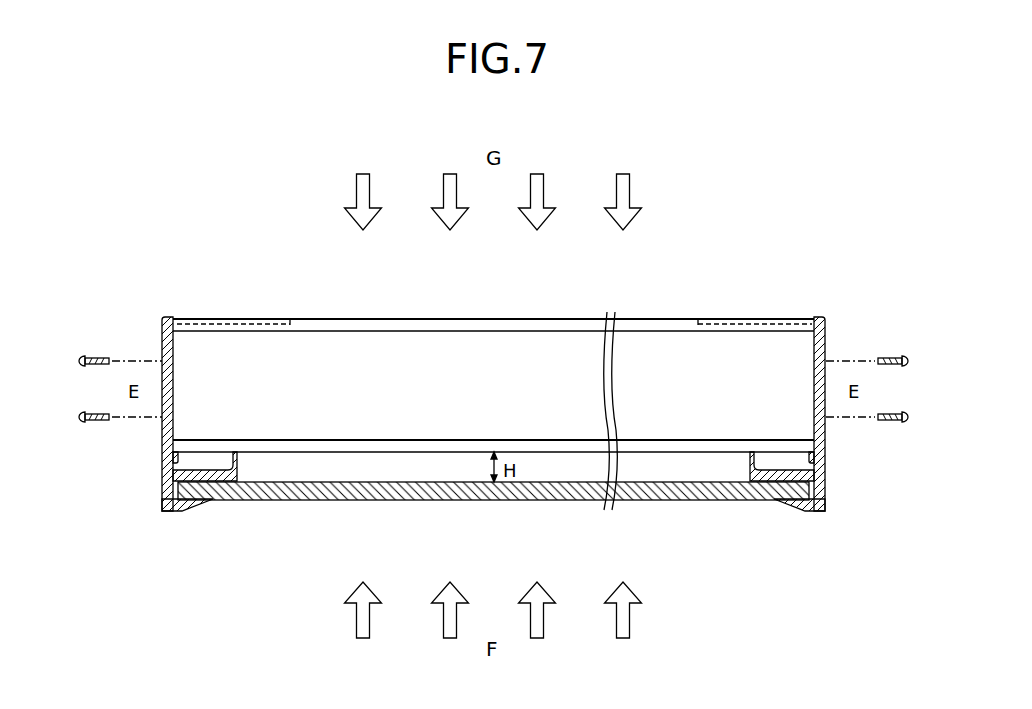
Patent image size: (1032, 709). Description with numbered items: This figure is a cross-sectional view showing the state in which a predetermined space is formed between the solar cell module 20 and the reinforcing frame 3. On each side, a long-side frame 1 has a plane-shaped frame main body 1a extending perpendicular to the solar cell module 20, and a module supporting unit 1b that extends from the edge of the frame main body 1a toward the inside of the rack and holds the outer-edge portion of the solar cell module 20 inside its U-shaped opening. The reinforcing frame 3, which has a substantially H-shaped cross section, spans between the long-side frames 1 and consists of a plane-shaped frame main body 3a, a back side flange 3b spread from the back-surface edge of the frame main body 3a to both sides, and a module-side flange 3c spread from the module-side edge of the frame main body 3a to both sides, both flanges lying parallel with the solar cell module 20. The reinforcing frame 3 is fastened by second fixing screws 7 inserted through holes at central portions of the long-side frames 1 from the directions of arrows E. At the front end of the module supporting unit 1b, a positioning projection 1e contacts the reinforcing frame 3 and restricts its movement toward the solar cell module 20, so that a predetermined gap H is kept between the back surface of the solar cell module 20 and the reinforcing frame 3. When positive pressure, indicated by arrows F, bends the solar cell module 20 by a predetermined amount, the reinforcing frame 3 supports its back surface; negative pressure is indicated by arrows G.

The long-side frame 1 is at (161, 336).
The frame main body 1a is at (161, 443).
The module supporting unit 1b is at (213, 503).
The positioning projection 1e is at (238, 460).
The reinforcing frame 3 is at (465, 318).
The frame main body 3a is at (330, 345).
The back side flange 3b is at (410, 318).
The module-side flange 3c is at (333, 453).
The second fixing screws 7 is at (98, 353).
The solar cell module 20 is at (376, 501).